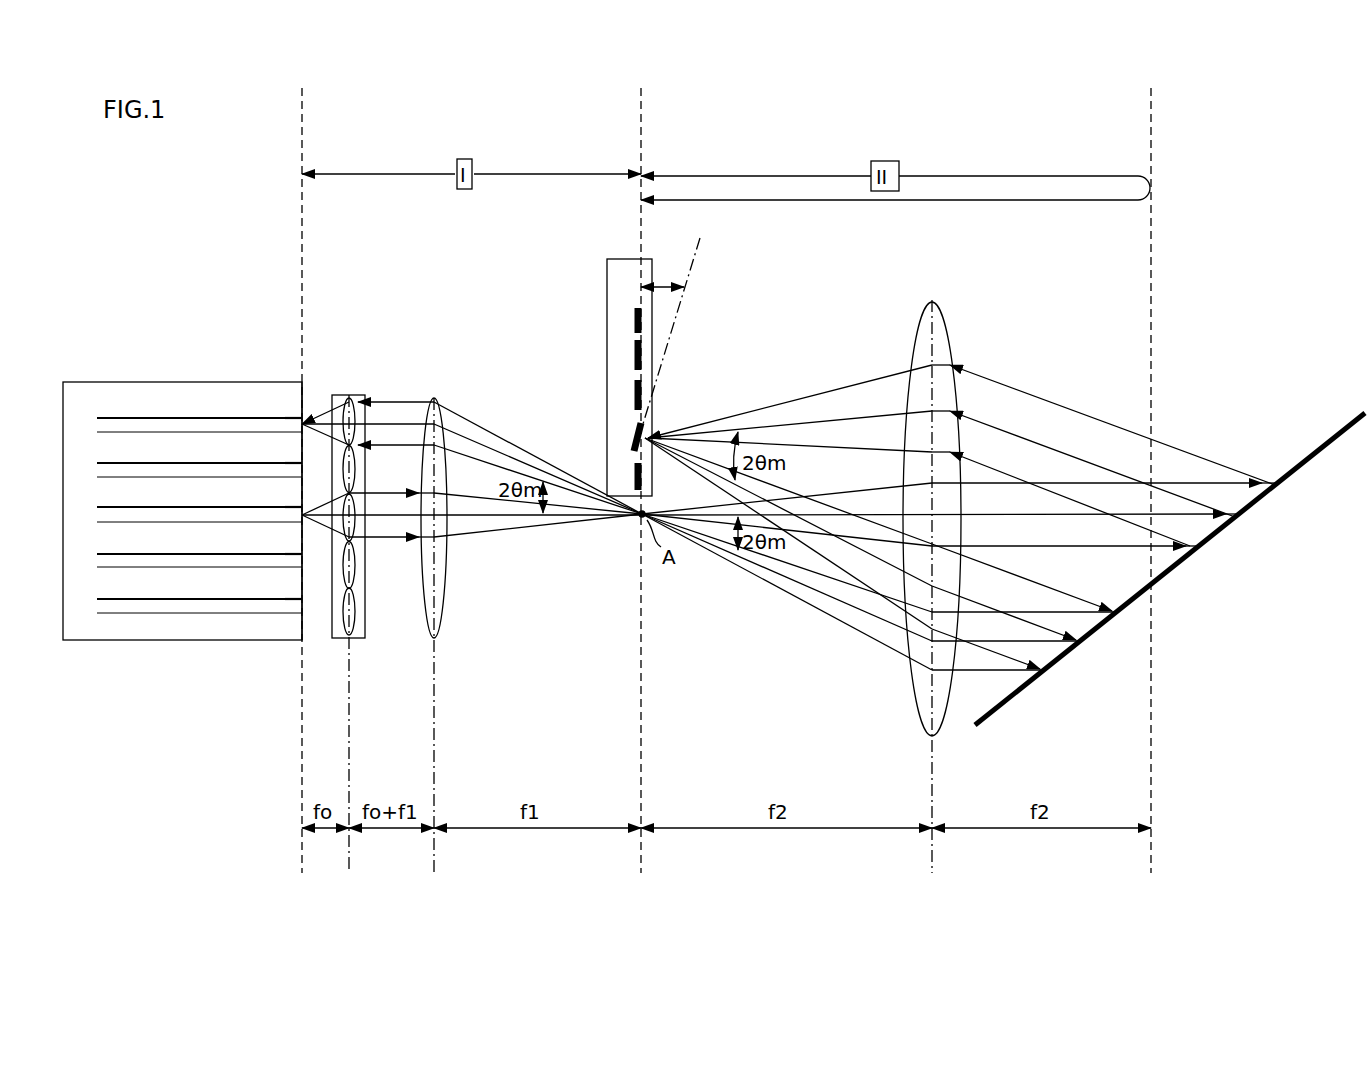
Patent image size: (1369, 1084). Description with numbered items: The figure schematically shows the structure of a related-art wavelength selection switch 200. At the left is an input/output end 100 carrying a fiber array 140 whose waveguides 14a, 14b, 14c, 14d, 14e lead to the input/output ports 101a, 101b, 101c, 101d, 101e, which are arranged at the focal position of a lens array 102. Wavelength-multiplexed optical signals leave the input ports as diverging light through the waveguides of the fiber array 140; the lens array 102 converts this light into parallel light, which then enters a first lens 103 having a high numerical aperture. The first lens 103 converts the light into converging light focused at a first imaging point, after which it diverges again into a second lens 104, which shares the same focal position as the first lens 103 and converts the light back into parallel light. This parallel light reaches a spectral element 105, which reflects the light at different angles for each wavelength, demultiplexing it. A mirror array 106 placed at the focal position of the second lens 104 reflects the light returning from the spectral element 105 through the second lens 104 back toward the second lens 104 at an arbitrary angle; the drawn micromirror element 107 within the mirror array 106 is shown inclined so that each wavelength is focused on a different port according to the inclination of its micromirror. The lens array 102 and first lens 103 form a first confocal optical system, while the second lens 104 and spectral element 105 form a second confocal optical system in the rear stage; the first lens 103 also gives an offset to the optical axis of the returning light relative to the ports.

The input/output end 100 is at (304, 645).
The fiber array 140 is at (300, 382).
The waveguide 14a is at (117, 414).
The waveguide 14b is at (117, 459).
The waveguide 14c is at (117, 503).
The waveguide 14d is at (117, 550).
The waveguide 14e is at (117, 595).
The input/output port 101a is at (291, 418).
The input/output port 101b is at (291, 463).
The input/output port 101c is at (291, 507).
The input/output port 101d is at (291, 554).
The input/output port 101e is at (291, 599).
The lens array 102 is at (336, 395).
The first lens 103 is at (434, 398).
The second lens 104 is at (930, 303).
The spectral element 105 is at (1340, 433).
The mirror array 106 is at (623, 259).
The scanning mirror 107 is at (652, 429).
The wavelength selection switch 200 is at (1237, 190).